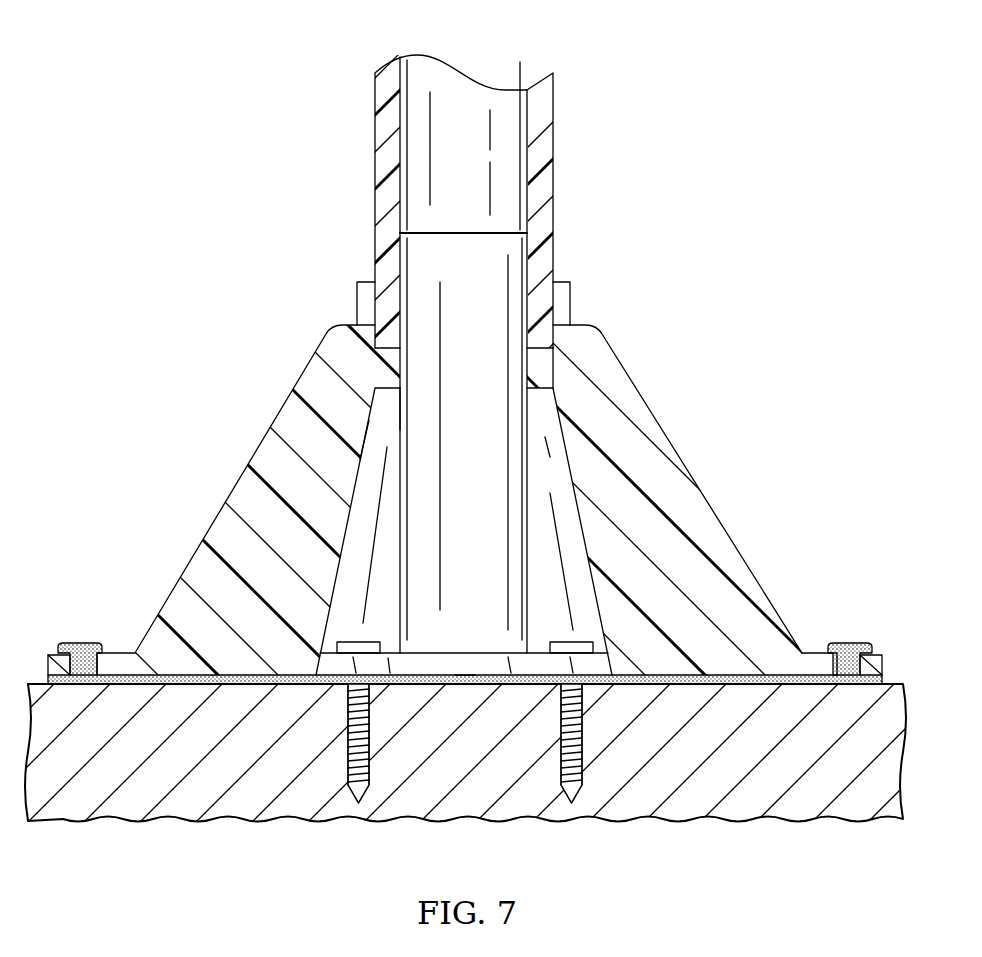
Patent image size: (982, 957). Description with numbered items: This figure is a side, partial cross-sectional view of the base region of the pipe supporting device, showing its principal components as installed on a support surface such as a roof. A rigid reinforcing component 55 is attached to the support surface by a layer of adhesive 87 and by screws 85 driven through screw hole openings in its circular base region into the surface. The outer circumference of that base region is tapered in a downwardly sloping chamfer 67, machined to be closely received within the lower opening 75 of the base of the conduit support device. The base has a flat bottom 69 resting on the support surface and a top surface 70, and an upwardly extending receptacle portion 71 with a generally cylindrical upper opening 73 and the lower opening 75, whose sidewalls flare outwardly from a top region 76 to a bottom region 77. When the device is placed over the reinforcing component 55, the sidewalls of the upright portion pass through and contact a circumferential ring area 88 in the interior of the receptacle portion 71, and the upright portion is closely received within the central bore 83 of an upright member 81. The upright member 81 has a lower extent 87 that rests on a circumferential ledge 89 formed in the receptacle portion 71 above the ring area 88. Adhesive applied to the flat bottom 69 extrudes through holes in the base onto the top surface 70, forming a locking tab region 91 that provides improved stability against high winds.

The reinforcing component 55 is at (437, 624).
The chamfer 67 is at (607, 645).
The flat bottom 69 is at (800, 683).
The top surface 70 is at (125, 668).
The receptacle portion 71 is at (573, 316).
The upper opening 73 is at (540, 305).
The lower opening 75 is at (585, 500).
The top region 76 is at (362, 455).
The bottom region 77 is at (337, 585).
The upright member 81 is at (545, 190).
The central bore 83 is at (524, 108).
The screws 85 is at (572, 778).
The layer of adhesive 87 is at (545, 348).
The circumferential ring area 88 is at (412, 408).
The circumferential ledge 89 is at (388, 350).
The locking tab region 91 is at (77, 672).